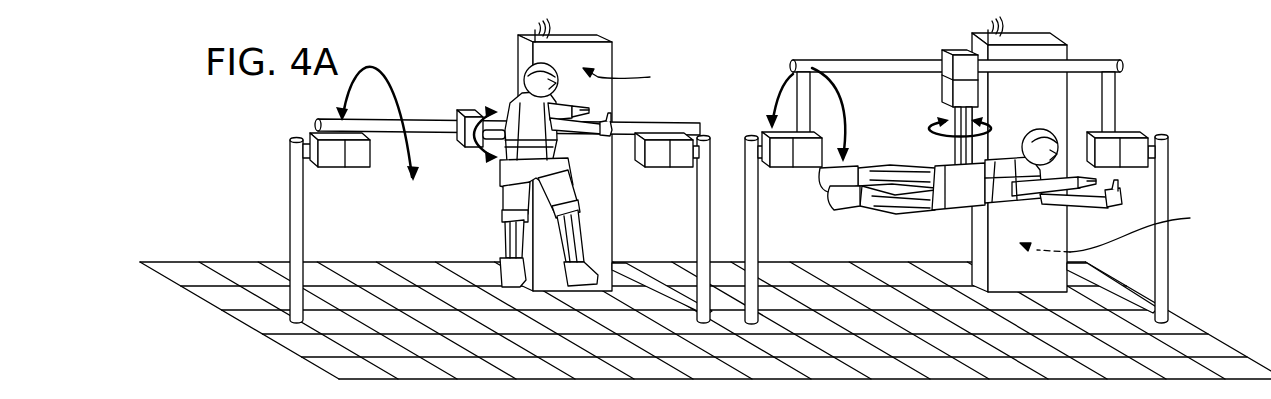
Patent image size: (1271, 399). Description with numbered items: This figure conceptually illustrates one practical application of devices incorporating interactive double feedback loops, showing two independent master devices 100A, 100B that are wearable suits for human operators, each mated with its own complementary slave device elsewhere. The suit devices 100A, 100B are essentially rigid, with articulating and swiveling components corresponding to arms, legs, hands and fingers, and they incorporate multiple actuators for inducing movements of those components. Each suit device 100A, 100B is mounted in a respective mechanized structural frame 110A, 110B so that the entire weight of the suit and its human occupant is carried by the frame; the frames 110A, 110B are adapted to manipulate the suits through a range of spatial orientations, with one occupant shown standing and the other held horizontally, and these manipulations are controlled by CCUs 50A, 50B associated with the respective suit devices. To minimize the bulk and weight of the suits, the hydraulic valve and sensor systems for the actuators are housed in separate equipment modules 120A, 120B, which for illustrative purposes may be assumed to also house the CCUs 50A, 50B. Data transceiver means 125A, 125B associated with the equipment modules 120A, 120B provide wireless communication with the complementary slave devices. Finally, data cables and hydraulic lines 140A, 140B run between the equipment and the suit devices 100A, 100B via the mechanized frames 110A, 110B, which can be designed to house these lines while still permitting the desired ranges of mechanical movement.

The CCU 50A is at (637, 75).
The CCU 50B is at (1126, 229).
The master device 100A is at (500, 178).
The master device 100B is at (952, 218).
The mechanized structural frame 110A is at (290, 212).
The mechanized structural frame 110B is at (1170, 175).
The equipment module 120A is at (610, 50).
The equipment module 120B is at (1067, 48).
The data transceiver means 125A is at (552, 27).
The data transceiver means 125B is at (1008, 27).
The data cables and hydraulic lines 140A is at (656, 278).
The data cables and hydraulic lines 140B is at (1133, 298).